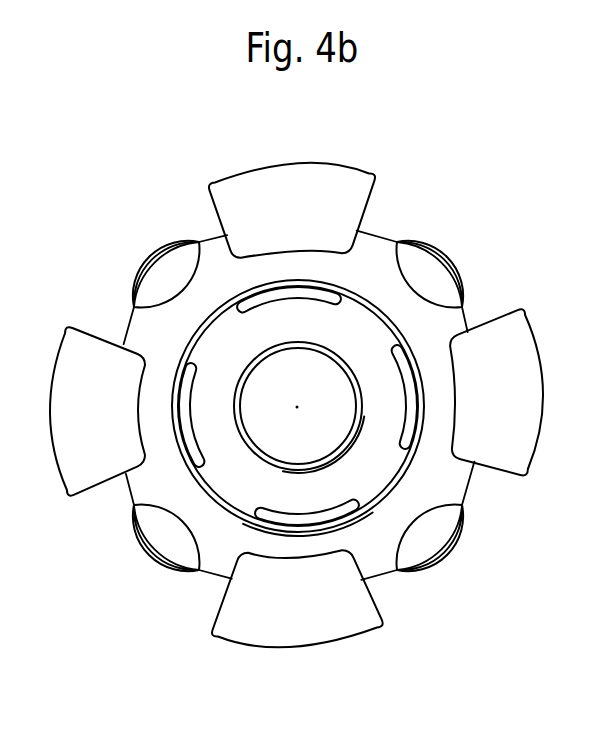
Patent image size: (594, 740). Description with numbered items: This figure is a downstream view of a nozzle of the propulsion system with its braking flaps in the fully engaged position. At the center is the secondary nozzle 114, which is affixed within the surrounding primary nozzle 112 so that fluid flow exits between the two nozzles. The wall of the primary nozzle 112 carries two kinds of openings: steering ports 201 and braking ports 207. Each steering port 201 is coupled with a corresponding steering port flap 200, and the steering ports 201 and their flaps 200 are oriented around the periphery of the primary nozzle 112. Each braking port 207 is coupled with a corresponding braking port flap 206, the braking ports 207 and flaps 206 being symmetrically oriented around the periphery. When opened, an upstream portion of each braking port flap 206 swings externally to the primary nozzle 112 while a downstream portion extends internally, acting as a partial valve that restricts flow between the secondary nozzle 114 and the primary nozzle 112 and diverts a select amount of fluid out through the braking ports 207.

The primary nozzle 112 is at (432, 315).
The secondary nozzle 114 is at (345, 336).
The steering port flap 200 is at (428, 245).
The steering port 201 is at (188, 273).
The braking port flap 206 is at (230, 307).
The braking port 207 is at (362, 228).